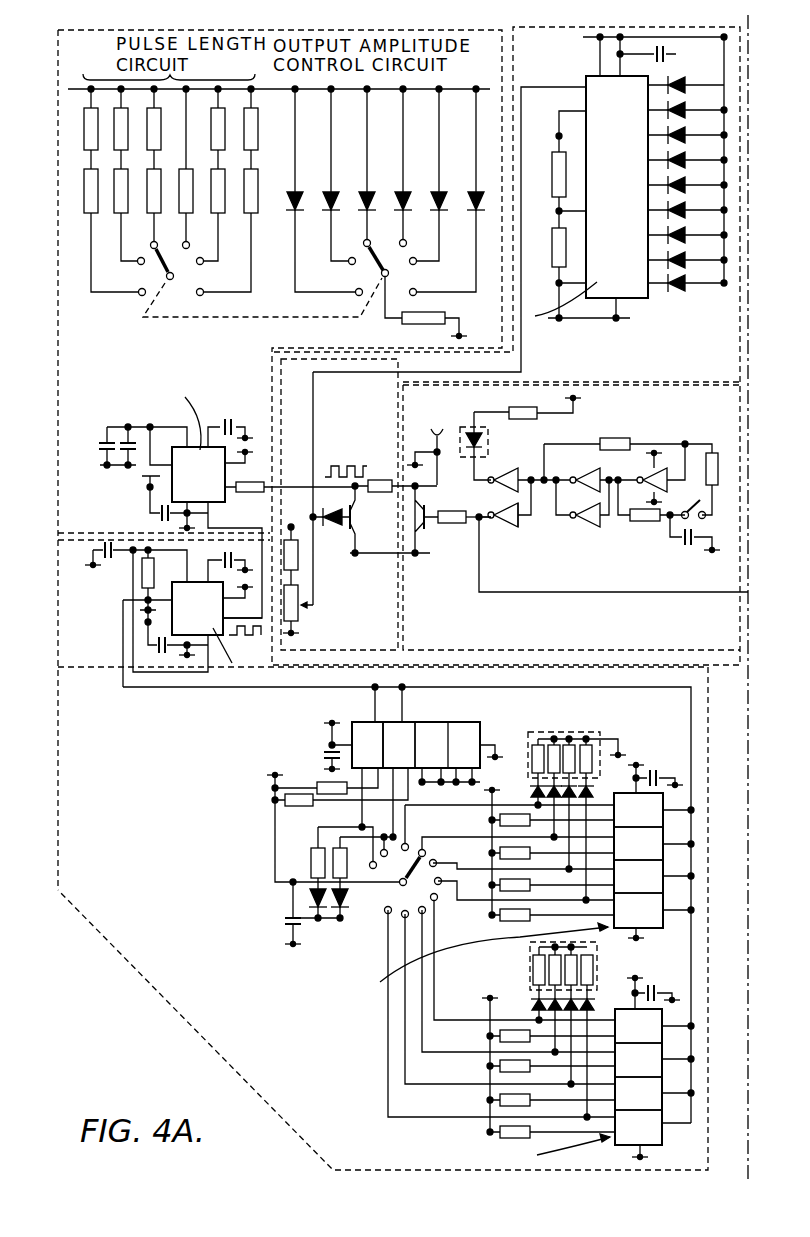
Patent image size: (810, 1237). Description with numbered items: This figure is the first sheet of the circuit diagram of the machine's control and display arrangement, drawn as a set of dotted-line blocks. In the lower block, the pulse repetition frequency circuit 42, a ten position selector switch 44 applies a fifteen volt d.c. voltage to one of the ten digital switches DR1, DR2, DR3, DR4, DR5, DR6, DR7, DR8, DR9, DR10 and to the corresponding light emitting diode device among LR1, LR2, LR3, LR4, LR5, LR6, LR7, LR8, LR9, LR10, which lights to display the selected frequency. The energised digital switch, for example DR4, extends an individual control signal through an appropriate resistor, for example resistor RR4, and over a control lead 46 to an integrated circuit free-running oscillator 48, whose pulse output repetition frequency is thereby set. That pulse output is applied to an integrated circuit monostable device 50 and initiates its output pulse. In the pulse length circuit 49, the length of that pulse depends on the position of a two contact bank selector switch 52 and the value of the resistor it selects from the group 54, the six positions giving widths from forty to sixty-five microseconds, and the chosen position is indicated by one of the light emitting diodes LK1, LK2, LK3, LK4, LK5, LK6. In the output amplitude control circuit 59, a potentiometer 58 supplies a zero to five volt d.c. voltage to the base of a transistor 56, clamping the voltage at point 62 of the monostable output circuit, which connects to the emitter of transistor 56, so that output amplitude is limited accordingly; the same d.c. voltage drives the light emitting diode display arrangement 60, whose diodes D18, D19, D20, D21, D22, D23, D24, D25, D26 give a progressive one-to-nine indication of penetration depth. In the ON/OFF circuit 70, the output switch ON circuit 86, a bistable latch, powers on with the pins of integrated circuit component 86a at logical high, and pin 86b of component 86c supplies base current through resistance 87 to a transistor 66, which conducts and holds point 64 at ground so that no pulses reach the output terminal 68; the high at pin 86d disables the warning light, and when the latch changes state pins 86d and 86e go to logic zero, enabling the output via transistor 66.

The pulse repetition frequency circuit 42 is at (100, 930).
The ten position selector switch 44 is at (427, 884).
The control lead 46 is at (423, 728).
The integrated circuit free-running oscillator 48 is at (207, 622).
The pulse length circuit 49 is at (353, 185).
The integrated circuit monostable device 50 is at (206, 487).
The two contact bank selector switch 52 is at (177, 268).
The group of resistors 54 is at (278, 195).
The transistor 56 is at (356, 510).
The potentiometer 58 is at (298, 613).
The output amplitude control circuit 59 is at (520, 206).
The light emitting diode display arrangement 60 is at (626, 204).
The point 62 is at (381, 467).
The point 64 is at (434, 519).
The transistor 66 is at (422, 514).
The output terminal 68 is at (429, 446).
The ON/OFF circuit 70 is at (412, 651).
The output switch ON circuit 86 is at (589, 487).
The integrated circuit component 86a is at (494, 476).
The pin 86b is at (492, 521).
The component 86c is at (508, 526).
The pin 86d is at (495, 487).
The pin 86e is at (497, 480).
The resistance 87 is at (455, 524).
The light emitting diode LK1 is at (293, 190).
The light emitting diode LK2 is at (329, 190).
The light emitting diode LK3 is at (365, 190).
The light emitting diode LK4 is at (401, 190).
The light emitting diode LK5 is at (437, 190).
The light emitting diode LK6 is at (466, 173).
The light emitting diode D18 is at (695, 279).
The light emitting diode D19 is at (695, 256).
The light emitting diode D20 is at (695, 231).
The light emitting diode D21 is at (695, 206).
The light emitting diode D22 is at (695, 181).
The light emitting diode D23 is at (695, 156).
The light emitting diode D24 is at (695, 131).
The light emitting diode D25 is at (695, 106).
The light emitting diode D26 is at (695, 81).
The digital switch DR1 is at (367, 745).
The digital switch DR2 is at (399, 745).
The digital switch DR3 is at (638, 810).
The digital switch DR4 is at (638, 843).
The digital switch DR5 is at (638, 876).
The digital switch DR6 is at (638, 910).
The digital switch DR7 is at (638, 1026).
The digital switch DR8 is at (638, 1060).
The digital switch DR9 is at (638, 1093).
The digital switch DR10 is at (638, 1127).
The light emitting diode device LR1 is at (313, 862).
The light emitting diode device LR2 is at (335, 846).
The light emitting diode device LR3 is at (532, 757).
The light emitting diode device LR4 is at (557, 742).
The light emitting diode device LR5 is at (575, 742).
The light emitting diode device LR6 is at (590, 758).
The light emitting diode device LR7 is at (589, 973).
The light emitting diode device LR8 is at (570, 965).
The light emitting diode device LR9 is at (553, 972).
The light emitting diode device LR10 is at (537, 962).
The resistor RR4 is at (503, 852).